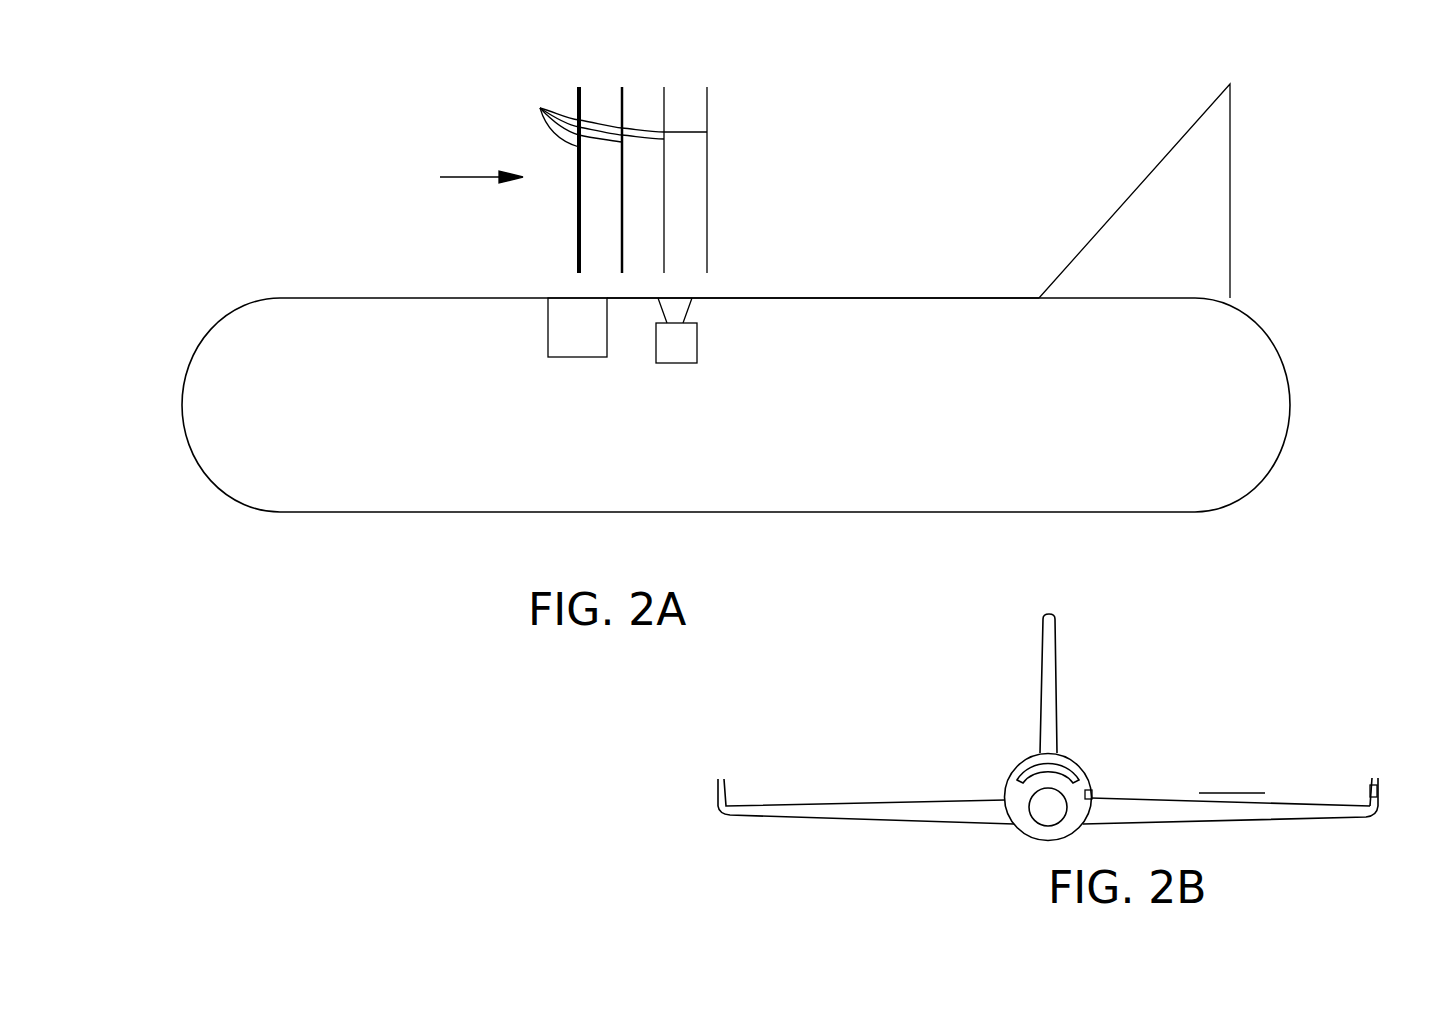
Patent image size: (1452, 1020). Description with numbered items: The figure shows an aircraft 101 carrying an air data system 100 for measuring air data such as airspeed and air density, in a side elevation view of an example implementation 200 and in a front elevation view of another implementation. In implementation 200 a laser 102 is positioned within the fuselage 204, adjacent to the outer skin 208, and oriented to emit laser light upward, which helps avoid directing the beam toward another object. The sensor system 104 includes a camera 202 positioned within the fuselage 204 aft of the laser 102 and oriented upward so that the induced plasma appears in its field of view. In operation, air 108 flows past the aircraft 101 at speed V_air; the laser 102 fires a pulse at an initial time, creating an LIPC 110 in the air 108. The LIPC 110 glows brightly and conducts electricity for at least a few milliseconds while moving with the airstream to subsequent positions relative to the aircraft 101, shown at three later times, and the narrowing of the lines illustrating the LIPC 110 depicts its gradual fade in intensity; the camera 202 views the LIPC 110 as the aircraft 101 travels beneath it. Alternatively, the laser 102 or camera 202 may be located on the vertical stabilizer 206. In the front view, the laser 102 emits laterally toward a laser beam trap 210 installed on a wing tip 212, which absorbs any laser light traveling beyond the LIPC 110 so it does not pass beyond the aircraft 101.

In FIG. 2A, the air data system 100 is at (175, 255).
In FIG. 2A, the example implementation 200 is at (719, 331).
In FIG. 2A, the aircraft 101 is at (235, 552).
In FIG. 2A, the laser 102 is at (565, 357).
In FIG. 2B, the laser 102 is at (1094, 792).
In FIG. 2A, the sensor system 104 is at (725, 365).
In FIG. 2A, the camera 202 is at (675, 363).
In FIG. 2A, the air 108 is at (345, 162).
In FIG. 2A, the LIPC 110 is at (609, 160).
In FIG. 2B, the LIPC 110 is at (1230, 792).
In FIG. 2A, the fuselage 204 is at (470, 498).
In FIG. 2A, the vertical stabilizer 206 is at (1210, 157).
In FIG. 2A, the outer skin 208 is at (833, 298).
In FIG. 2B, the laser beam trap 210 is at (1350, 748).
In FIG. 2B, the wing tip 212 is at (1392, 762).